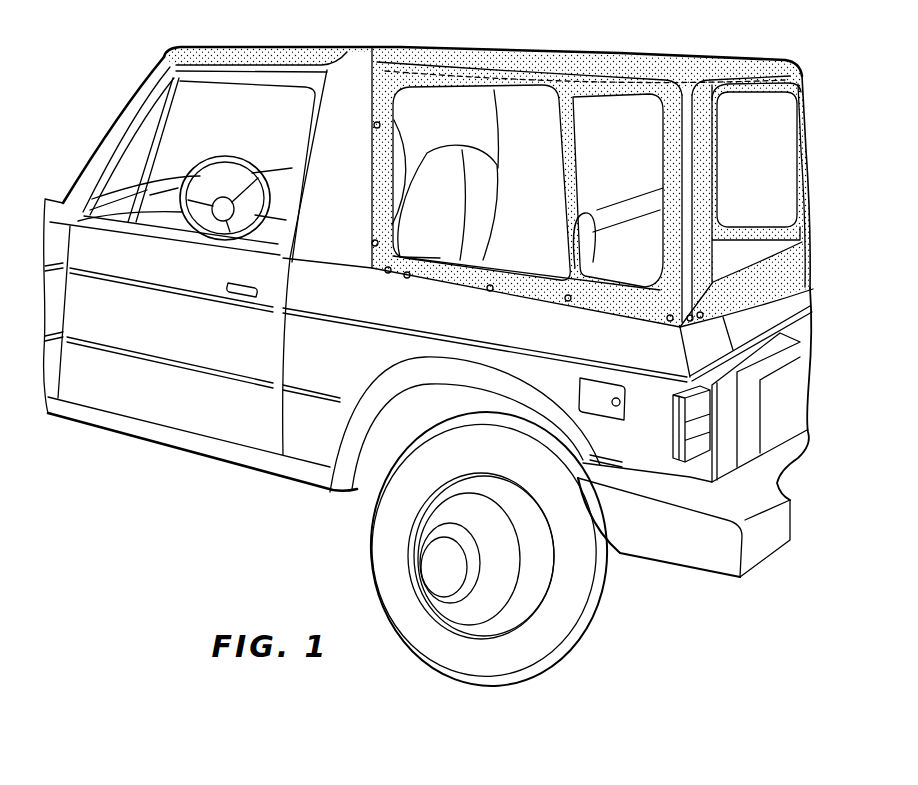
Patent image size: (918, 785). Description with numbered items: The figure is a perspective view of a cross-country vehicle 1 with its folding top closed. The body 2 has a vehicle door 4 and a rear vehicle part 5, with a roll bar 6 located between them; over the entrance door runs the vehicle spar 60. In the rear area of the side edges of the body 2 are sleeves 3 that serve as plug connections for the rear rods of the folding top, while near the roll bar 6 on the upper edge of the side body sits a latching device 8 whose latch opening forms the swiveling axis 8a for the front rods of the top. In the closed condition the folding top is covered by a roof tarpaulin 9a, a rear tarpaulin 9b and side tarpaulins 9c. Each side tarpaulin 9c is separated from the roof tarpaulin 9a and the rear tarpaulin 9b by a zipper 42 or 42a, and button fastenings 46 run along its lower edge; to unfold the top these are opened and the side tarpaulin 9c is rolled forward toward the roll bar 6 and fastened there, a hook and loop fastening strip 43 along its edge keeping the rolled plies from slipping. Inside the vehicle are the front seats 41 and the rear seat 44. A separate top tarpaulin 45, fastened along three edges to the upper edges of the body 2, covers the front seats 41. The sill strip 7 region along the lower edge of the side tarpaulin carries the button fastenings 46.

The cross-country vehicle 1 is at (428, 347).
The body 2 is at (429, 320).
The sleeve 3 is at (680, 322).
The vehicle door 4 is at (173, 337).
The rear vehicle part 5 is at (592, 344).
The roll bar 6 is at (349, 80).
The attachment sill strip 7 is at (505, 298).
The latching device 8 is at (366, 262).
The swiveling axis 8a is at (386, 274).
The roof tarpaulin 9a is at (660, 57).
The rear tarpaulin 9b is at (753, 87).
The side tarpaulin 9c is at (615, 83).
The front seat 41 is at (445, 163).
The zipper 42 is at (490, 77).
The zipper 42a is at (773, 77).
The hook and loop fastening strip 43 is at (533, 77).
The rear seat 44 is at (613, 207).
The top tarpaulin 45 is at (237, 53).
The button fastening 46 is at (567, 295).
The vehicle spar 60 is at (284, 67).